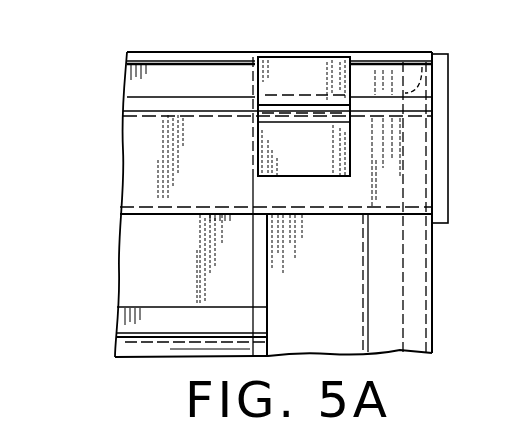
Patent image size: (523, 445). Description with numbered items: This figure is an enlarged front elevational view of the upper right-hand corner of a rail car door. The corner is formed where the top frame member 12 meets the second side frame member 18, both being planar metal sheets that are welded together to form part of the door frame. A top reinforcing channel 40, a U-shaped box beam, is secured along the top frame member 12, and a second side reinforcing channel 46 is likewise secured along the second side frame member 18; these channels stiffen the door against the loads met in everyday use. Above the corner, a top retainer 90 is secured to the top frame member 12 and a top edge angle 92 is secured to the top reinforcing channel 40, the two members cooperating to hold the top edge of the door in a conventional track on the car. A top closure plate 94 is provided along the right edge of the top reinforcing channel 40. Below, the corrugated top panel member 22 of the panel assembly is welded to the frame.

The top frame member 12 is at (148, 52).
The top retainer 90 is at (127, 63).
The top reinforcing channel 40 is at (137, 148).
The top edge angle 92 is at (300, 75).
The top closure plate 94 is at (440, 150).
The second side reinforcing channel 46 is at (343, 267).
The second side frame member 18 is at (413, 326).
The top panel member 22 is at (125, 345).